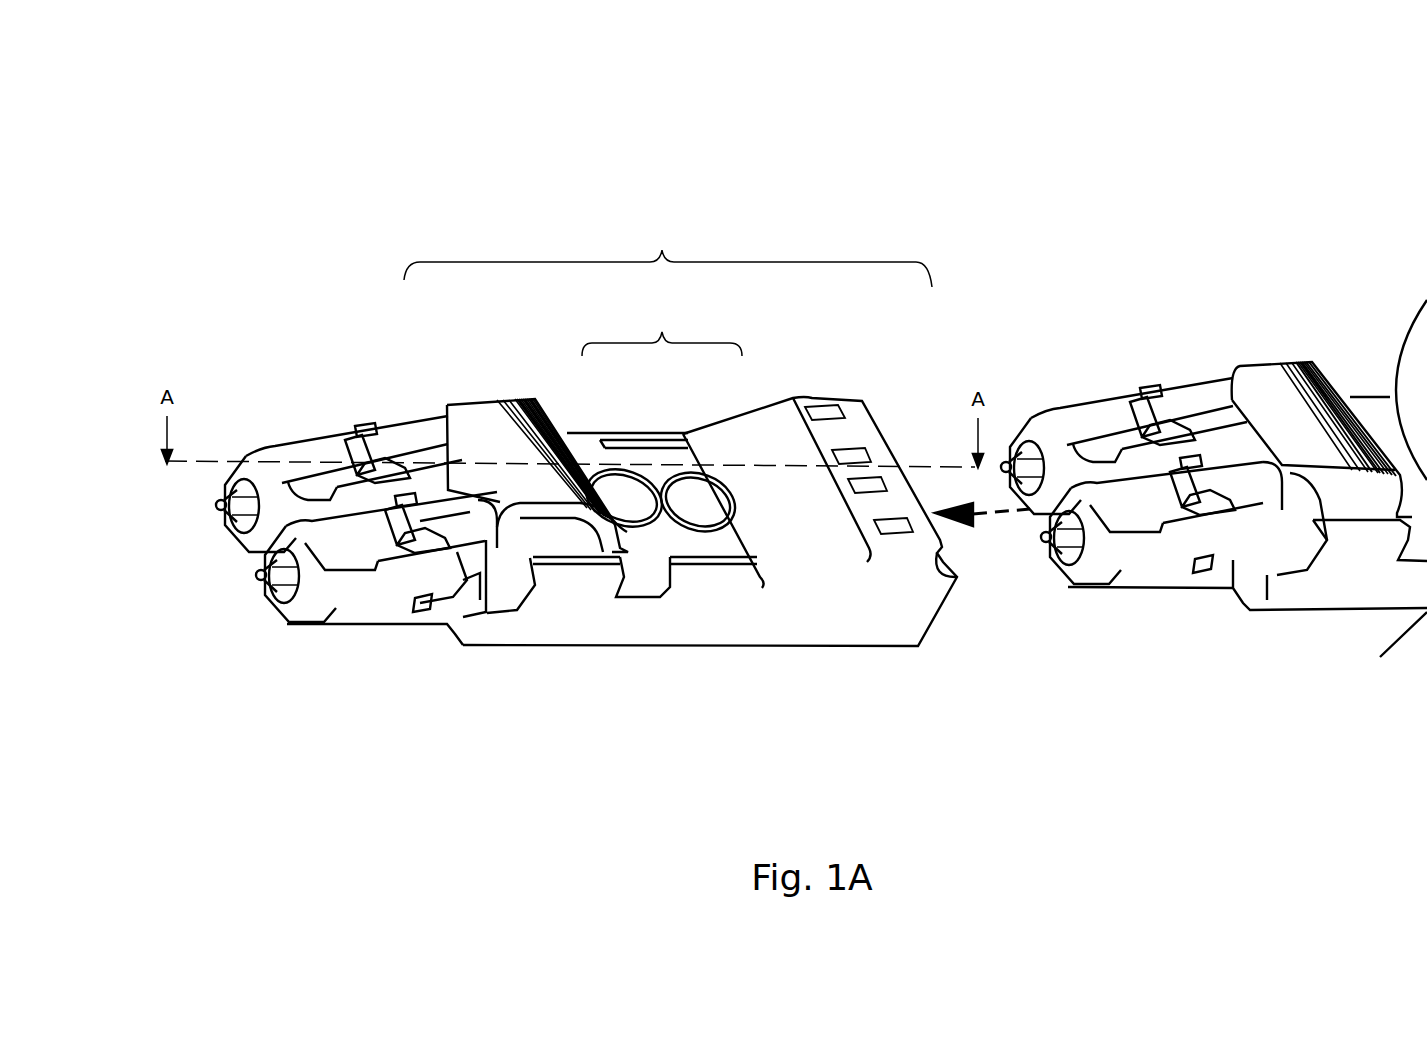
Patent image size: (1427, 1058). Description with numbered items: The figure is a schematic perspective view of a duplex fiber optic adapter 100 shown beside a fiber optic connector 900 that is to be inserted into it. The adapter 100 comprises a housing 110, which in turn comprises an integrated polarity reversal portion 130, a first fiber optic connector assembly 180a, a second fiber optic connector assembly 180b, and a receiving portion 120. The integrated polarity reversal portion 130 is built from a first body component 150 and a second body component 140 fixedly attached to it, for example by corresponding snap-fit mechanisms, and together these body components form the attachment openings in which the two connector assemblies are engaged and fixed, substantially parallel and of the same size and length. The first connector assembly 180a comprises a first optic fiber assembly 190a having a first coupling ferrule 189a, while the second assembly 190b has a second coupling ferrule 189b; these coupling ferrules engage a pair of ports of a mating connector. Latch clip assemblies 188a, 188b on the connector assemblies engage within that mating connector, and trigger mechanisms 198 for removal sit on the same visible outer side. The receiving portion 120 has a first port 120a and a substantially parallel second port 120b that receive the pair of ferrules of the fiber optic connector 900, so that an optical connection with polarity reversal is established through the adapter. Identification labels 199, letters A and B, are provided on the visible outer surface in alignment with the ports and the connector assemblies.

The duplex fiber optic adapter 100 is at (990, 147).
The housing 110 is at (668, 242).
The receiving portion 120 is at (860, 398).
The first port 120a is at (980, 615).
The second port 120b is at (920, 398).
The integrated polarity reversal portion 130 is at (662, 319).
The second body component 140 is at (581, 432).
The first body component 150 is at (640, 434).
The first fiber optic connector assembly 180a is at (313, 443).
The second fiber optic connector assembly 180b is at (383, 502).
The latch clip assembly 188a is at (383, 502).
The latch clip assembly 188b is at (487, 527).
The first coupling ferrule 189a is at (218, 505).
The second coupling ferrule 189b is at (260, 575).
The first optic fiber assembly 190a is at (178, 500).
The second fiber optic connector assembly 190b is at (222, 566).
The trigger mechanism 198 is at (568, 527).
The identification labels 199 is at (760, 537).
The fiber optic connector 900 is at (1250, 392).